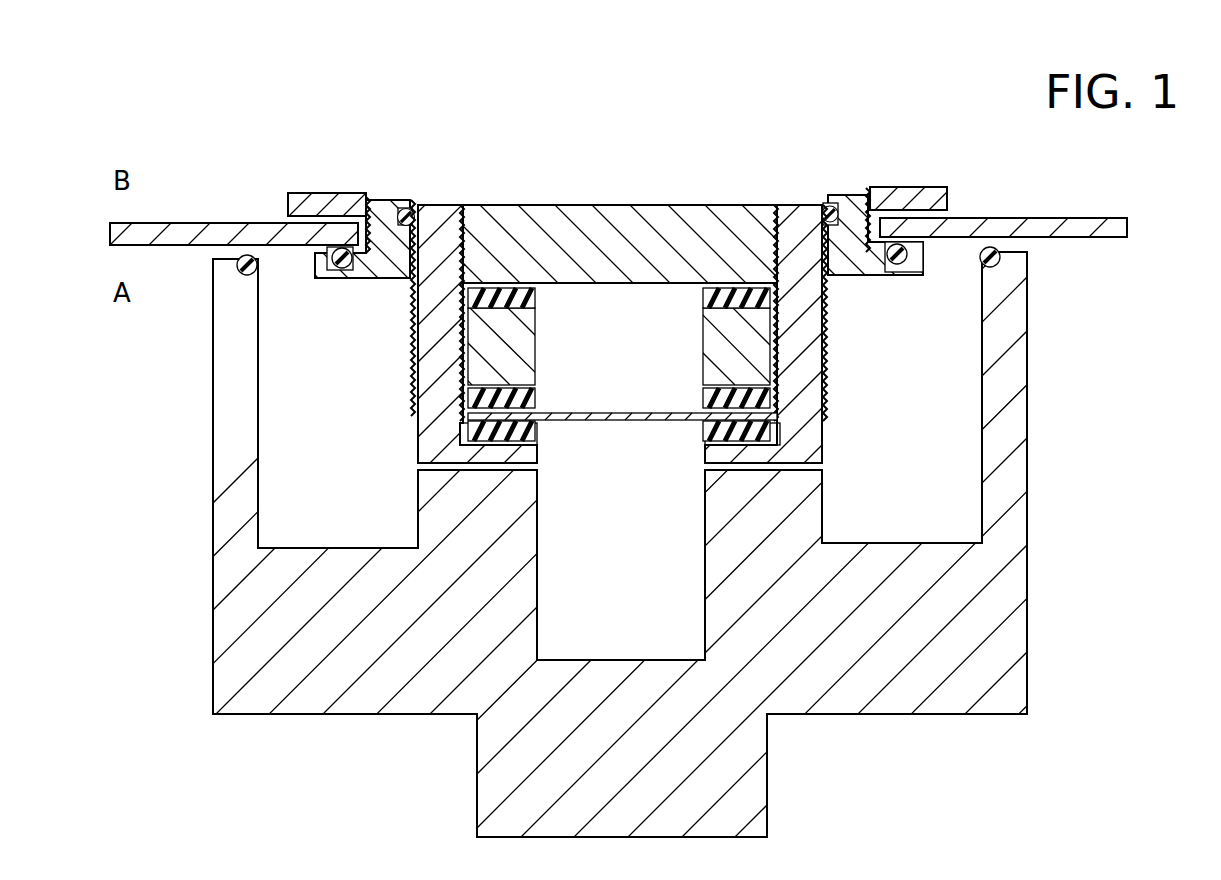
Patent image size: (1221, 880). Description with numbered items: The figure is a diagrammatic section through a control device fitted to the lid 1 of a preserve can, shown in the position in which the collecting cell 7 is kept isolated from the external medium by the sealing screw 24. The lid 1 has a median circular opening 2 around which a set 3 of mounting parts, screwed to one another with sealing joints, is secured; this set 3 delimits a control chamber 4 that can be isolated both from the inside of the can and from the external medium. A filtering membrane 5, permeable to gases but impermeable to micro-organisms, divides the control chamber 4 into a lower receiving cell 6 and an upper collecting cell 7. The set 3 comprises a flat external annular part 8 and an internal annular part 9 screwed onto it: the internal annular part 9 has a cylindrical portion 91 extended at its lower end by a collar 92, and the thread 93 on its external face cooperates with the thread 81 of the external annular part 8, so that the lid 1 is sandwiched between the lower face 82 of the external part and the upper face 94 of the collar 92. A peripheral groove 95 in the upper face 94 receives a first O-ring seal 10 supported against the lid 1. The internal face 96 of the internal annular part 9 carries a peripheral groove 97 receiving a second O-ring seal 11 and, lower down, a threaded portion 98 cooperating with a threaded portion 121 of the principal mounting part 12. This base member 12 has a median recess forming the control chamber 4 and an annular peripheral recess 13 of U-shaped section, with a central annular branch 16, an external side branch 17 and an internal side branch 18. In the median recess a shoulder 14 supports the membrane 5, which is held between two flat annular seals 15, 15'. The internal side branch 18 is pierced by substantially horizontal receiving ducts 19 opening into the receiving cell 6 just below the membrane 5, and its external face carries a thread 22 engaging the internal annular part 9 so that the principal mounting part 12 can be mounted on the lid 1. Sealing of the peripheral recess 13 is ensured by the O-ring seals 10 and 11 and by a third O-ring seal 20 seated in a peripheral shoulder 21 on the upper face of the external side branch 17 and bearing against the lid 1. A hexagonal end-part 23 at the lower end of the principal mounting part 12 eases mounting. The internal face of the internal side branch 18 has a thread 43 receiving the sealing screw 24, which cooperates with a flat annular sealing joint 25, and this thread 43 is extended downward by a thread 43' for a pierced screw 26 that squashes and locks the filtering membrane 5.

The lid 1 is at (1082, 220).
The circular opening 2 is at (607, 104).
The set of mounting parts 3 is at (459, 96).
The control chamber 4 is at (633, 612).
The filtering membrane 5 is at (650, 420).
The receiving cell 6 is at (667, 608).
The collecting cell 7 is at (621, 350).
The external annular part 8 is at (291, 195).
The thread of the external annular part 81 is at (868, 205).
The lower face of the external annular part 82 is at (318, 193).
The internal annular part 9 is at (395, 300).
The cylindrical portion 91 is at (373, 205).
The collar 92 is at (372, 280).
The thread 93 is at (900, 187).
The upper face of the collar 94 is at (987, 213).
The peripheral groove 95 is at (338, 272).
The internal face of the internal annular part 96 is at (438, 230).
The peripheral groove 97 is at (395, 210).
The threaded portion 98 is at (450, 250).
The first O-ring seal 10 is at (290, 268).
The second O-ring seal 11 is at (830, 208).
The principal mounting part 12 is at (950, 655).
The threaded portion of the principal mounting part 121 is at (790, 215).
The annular peripheral recess 13 is at (945, 440).
The shoulder 14 is at (732, 470).
The flat annular seal 15 is at (619, 386).
The flat annular seal 15' is at (619, 440).
The central annular branch 16 is at (937, 547).
The external side branch 17 is at (232, 443).
The internal side branch 18 is at (430, 345).
The receiving ducts 19 is at (790, 470).
The third O-ring seal 20 is at (977, 256).
The peripheral shoulder 21 is at (1000, 262).
The thread 22 is at (470, 267).
The hexagonal end-part 23 is at (690, 812).
The sealing screw 24 is at (623, 225).
The flat annular sealing joint 25 is at (700, 260).
The pierced screw 26 is at (440, 400).
The thread 43 is at (619, 213).
The thread 43' is at (837, 313).